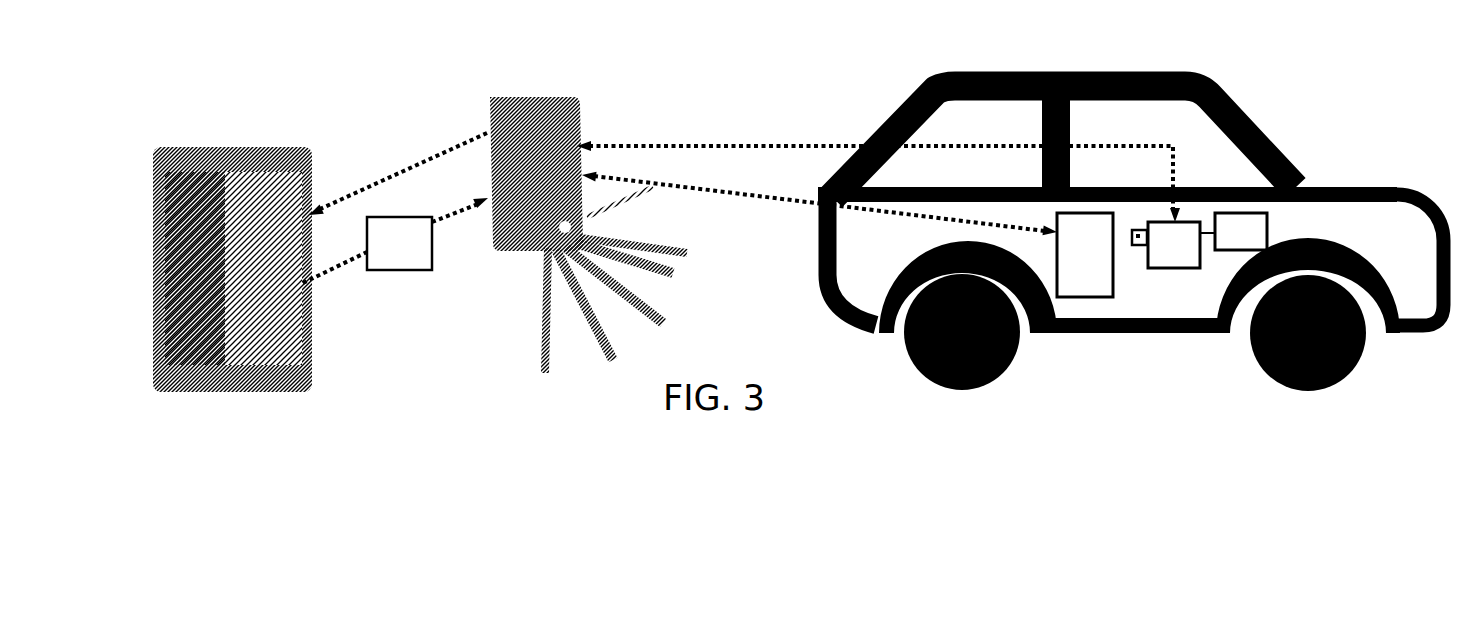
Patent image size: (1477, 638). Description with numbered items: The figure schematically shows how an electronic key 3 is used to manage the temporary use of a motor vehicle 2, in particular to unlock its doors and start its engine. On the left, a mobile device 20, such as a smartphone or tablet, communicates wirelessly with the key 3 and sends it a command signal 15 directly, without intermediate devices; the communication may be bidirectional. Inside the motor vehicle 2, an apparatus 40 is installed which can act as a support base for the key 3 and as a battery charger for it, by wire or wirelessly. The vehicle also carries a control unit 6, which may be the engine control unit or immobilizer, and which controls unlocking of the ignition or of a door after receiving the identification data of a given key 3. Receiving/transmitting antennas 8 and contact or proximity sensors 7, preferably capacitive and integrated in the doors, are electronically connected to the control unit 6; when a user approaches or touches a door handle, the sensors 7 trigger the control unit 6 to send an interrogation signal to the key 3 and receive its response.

The motor vehicle 2 is at (1208, 83).
The electronic key 3 is at (493, 98).
The control unit 6 is at (1173, 268).
The contact and/or proximity sensors 7 is at (1242, 233).
The receiving/transmitting antennas 8 is at (1138, 245).
The command signal 15 is at (395, 208).
The mobile device 20 is at (173, 143).
The apparatus 40 is at (1090, 297).